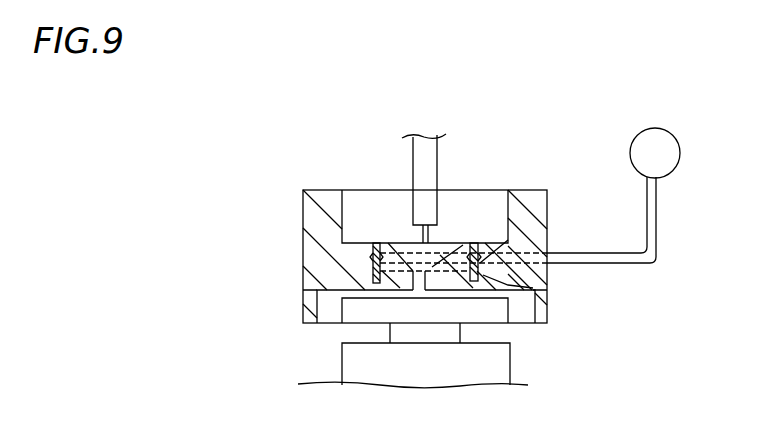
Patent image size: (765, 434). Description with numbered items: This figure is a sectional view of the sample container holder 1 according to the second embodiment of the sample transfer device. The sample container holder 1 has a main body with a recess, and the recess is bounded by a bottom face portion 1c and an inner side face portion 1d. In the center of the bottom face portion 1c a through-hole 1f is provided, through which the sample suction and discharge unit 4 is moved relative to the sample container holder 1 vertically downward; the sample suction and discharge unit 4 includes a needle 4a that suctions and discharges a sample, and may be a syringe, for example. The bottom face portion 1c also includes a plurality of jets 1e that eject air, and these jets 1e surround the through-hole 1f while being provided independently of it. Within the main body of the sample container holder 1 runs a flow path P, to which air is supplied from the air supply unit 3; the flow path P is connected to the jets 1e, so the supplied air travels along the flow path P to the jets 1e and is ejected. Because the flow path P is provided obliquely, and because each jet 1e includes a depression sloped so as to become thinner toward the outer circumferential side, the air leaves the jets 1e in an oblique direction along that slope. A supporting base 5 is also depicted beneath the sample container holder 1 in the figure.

The sample container holder 1 is at (512, 190).
The bottom face portion 1c is at (322, 322).
The inner side face portion 1d is at (388, 243).
The jet 1e is at (363, 278).
The through-hole 1f is at (423, 290).
The air supply unit 3 is at (673, 142).
The flow path P is at (657, 218).
The sample suction and discharge unit 4 is at (437, 150).
The needle 4a is at (429, 240).
The base plate 5 is at (498, 358).